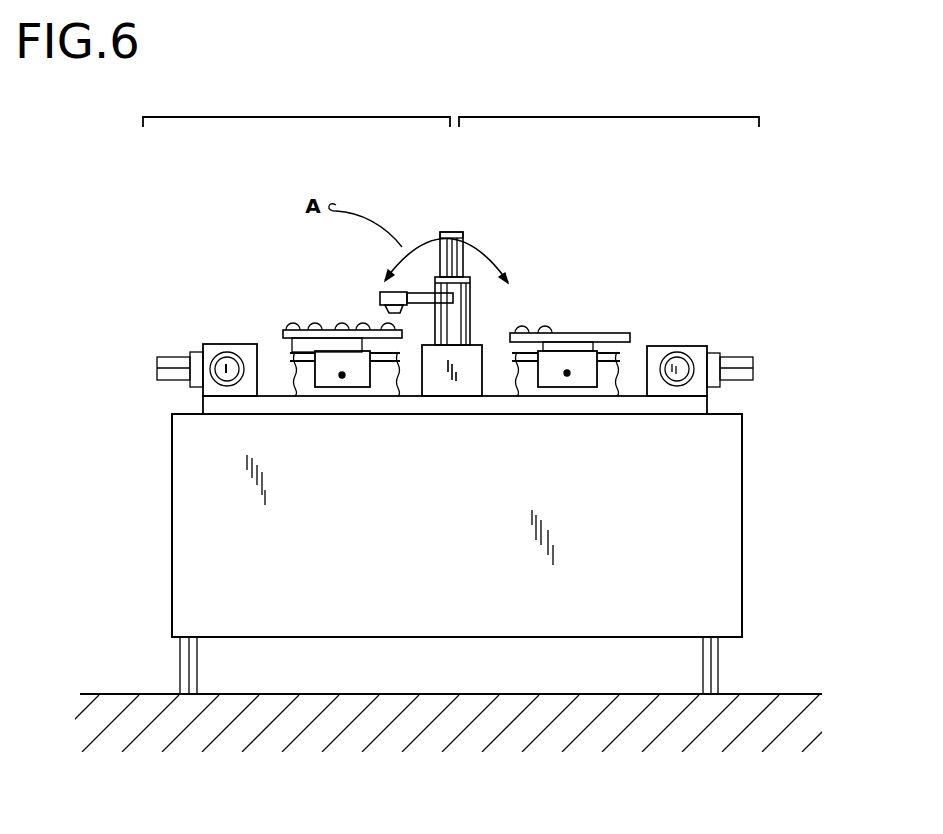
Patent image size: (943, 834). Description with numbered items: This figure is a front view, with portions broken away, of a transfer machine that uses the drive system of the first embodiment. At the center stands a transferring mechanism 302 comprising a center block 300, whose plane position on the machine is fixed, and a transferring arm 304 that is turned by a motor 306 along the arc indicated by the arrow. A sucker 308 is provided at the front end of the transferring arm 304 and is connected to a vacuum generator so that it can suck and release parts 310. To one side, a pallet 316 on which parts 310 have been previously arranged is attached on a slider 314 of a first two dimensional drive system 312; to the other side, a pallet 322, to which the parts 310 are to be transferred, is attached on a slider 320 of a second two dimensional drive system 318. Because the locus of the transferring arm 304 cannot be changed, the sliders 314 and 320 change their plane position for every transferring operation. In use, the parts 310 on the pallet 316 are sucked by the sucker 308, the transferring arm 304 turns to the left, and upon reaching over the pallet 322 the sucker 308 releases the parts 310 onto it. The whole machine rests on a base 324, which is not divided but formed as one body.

The center block 300 is at (471, 327).
The transferring mechanism 302 is at (472, 226).
The transferring arm 304 is at (420, 305).
The motor 306 is at (447, 227).
The sucker 308 is at (383, 309).
The parts 310 is at (296, 328).
The first two dimensional drive system 312 is at (601, 113).
The slider 314 is at (585, 388).
The pallet 316 is at (632, 339).
The second two dimensional drive system 318 is at (291, 113).
The slider 320 is at (327, 388).
The pallet 322 is at (290, 338).
The base 324 is at (508, 405).